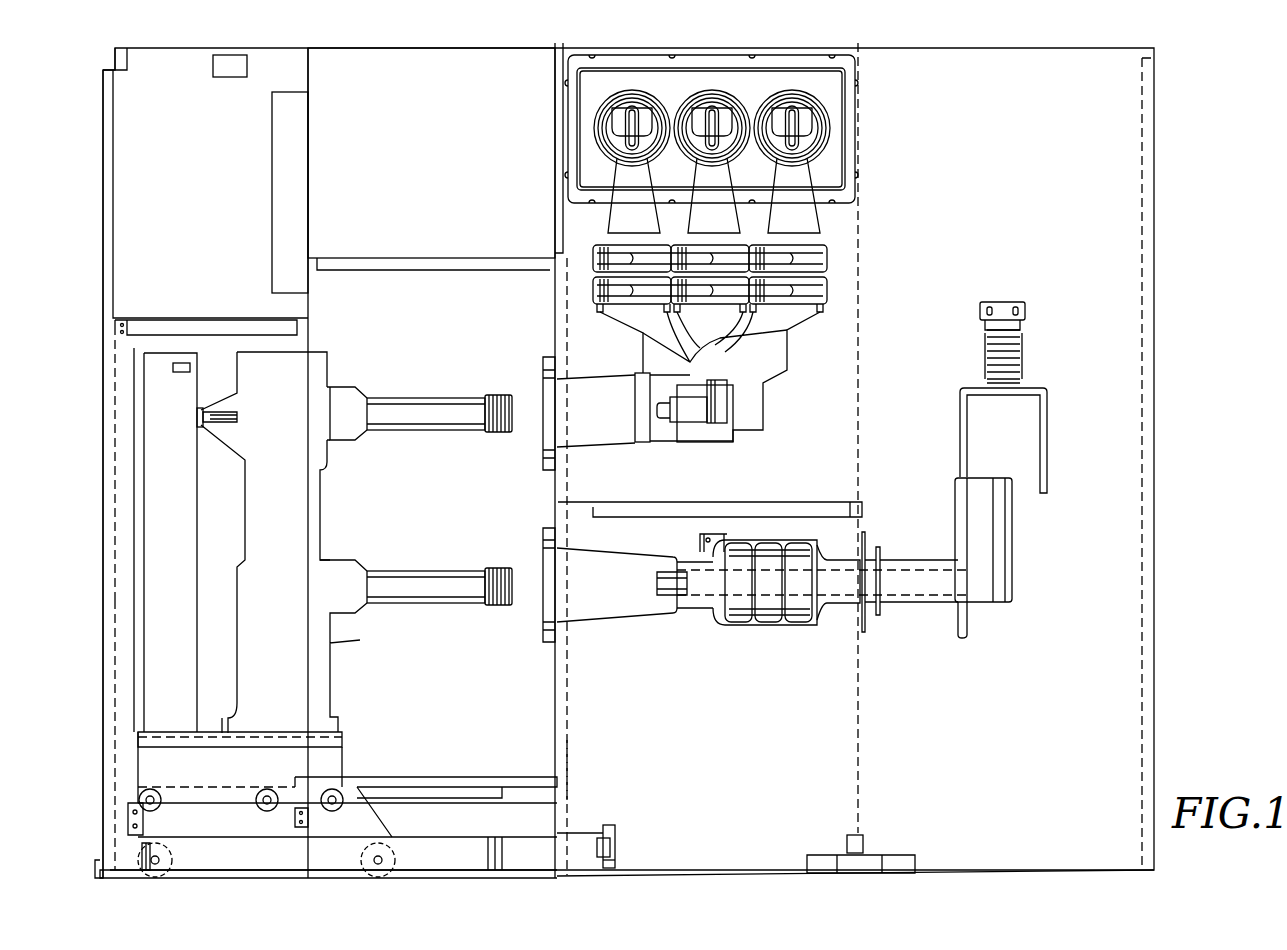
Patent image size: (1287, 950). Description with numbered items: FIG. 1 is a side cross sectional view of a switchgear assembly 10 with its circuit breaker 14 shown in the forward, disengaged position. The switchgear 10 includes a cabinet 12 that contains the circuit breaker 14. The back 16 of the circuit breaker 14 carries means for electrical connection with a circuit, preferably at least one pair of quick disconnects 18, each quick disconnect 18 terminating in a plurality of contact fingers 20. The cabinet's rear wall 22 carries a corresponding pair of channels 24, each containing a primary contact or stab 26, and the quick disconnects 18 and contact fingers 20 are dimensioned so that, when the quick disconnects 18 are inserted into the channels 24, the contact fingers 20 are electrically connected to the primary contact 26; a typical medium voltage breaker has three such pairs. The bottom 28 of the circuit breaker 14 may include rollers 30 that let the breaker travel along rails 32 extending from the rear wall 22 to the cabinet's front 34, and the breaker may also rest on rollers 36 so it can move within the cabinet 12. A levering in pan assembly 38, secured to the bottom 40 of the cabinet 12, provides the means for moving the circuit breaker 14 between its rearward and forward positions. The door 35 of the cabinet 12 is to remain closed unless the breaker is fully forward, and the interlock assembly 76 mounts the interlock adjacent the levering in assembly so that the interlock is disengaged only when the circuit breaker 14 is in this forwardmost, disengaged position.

The switchgear assembly 10 is at (1165, 318).
The cabinet 12 is at (357, 322).
The circuit breaker 14 is at (282, 407).
The back of the circuit breaker 16 is at (323, 477).
The quick disconnects 18 is at (442, 426).
The contact fingers 20 is at (490, 398).
The rear wall of the cabinet 22 is at (564, 708).
The channels 24 is at (590, 448).
The primary contact or stab 26 is at (685, 415).
The bottom of the circuit breaker 28 is at (242, 787).
The rollers 30 is at (150, 788).
The rails 32 is at (210, 832).
The front of the cabinet 34 is at (102, 796).
The door 35 is at (102, 446).
The rollers 36 is at (162, 870).
The levering in pan assembly 38 is at (575, 763).
The bottom of the cabinet 40 is at (467, 877).
The interlock assembly 76 is at (627, 842).